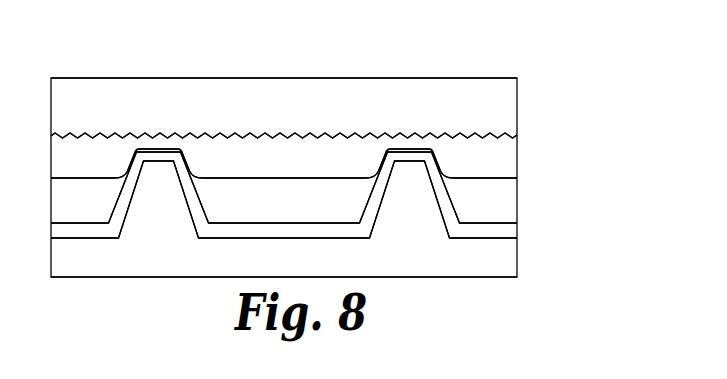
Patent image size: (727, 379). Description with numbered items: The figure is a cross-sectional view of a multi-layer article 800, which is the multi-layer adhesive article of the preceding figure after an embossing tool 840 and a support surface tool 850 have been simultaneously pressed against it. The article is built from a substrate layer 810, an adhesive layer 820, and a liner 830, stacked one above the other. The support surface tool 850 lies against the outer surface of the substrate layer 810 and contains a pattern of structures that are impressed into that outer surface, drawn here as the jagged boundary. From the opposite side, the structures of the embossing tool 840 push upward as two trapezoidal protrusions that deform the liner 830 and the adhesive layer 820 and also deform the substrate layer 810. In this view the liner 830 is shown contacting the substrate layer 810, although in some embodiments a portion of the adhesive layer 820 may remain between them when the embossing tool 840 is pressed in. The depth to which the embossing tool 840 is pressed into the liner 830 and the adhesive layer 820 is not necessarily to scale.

The multi-layer article 800 is at (534, 44).
The support surface tool 850 is at (517, 105).
The substrate layer 810 is at (517, 157).
The adhesive layer 820 is at (517, 202).
The liner 830 is at (517, 231).
The embossing tool 840 is at (517, 268).